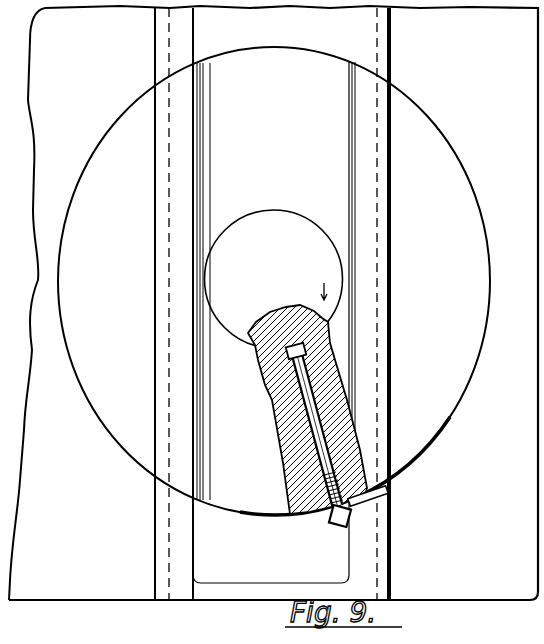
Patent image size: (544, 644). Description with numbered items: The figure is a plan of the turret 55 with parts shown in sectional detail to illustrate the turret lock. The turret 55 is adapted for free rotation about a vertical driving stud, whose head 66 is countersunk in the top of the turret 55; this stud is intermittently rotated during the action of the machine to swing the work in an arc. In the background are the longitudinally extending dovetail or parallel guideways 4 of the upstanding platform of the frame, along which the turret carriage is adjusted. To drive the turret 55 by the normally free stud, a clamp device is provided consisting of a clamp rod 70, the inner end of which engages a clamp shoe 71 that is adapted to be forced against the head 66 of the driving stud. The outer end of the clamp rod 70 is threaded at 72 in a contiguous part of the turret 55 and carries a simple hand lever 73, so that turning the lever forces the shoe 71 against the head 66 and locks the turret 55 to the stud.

The guideways 4 is at (365, 553).
The turret 55 is at (424, 414).
The head 66 is at (322, 202).
The clamp rod 70 is at (325, 445).
The clamp shoe 71 is at (290, 349).
The threaded portion 72 is at (335, 483).
The hand lever 73 is at (385, 508).